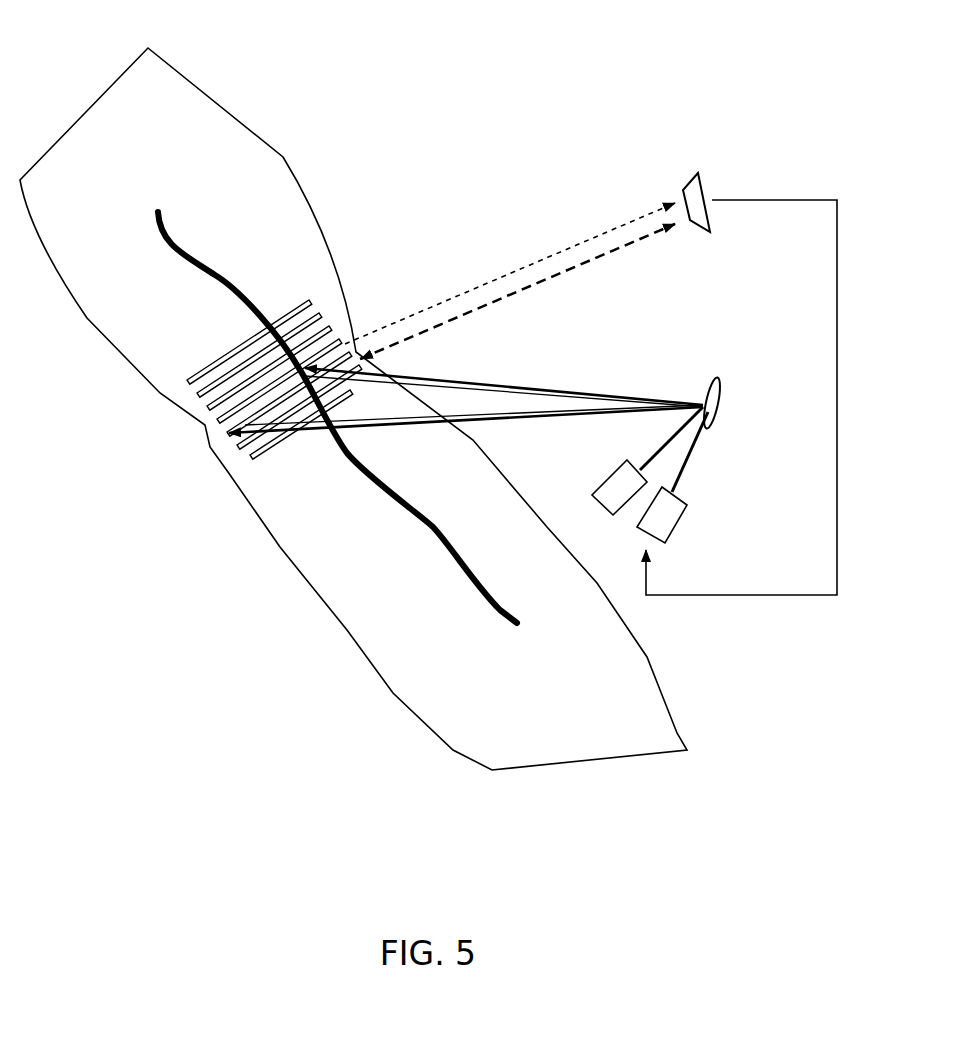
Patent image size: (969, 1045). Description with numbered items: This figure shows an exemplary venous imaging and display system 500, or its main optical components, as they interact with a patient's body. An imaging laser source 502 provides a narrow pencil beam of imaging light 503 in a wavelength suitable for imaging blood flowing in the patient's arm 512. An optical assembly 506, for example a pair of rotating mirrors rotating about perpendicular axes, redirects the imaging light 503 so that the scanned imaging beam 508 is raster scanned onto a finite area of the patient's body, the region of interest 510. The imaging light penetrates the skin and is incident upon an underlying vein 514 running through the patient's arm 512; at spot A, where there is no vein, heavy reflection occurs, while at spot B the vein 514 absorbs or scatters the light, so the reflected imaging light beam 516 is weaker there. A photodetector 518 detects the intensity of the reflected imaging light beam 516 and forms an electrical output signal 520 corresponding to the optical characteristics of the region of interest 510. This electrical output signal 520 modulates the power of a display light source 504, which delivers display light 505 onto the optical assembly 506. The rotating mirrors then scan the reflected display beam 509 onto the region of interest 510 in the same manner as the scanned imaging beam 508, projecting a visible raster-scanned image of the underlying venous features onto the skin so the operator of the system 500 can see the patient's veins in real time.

The venous imaging and display system 500 is at (533, 100).
The imaging laser source 502 is at (605, 470).
The imaging light 503 is at (649, 442).
The display light source 504 is at (681, 532).
The display light 505 is at (690, 475).
The optical assembly 506 is at (729, 400).
The scanned imaging beam 508 is at (456, 407).
The reflected display beam 509 is at (393, 394).
The region of interest 510 is at (329, 304).
The patient's arm 512 is at (335, 238).
The vein 514 is at (184, 231).
The reflected imaging light beam 516 is at (533, 284).
The photodetector 518 is at (708, 186).
The electrical output signal 520 is at (737, 604).